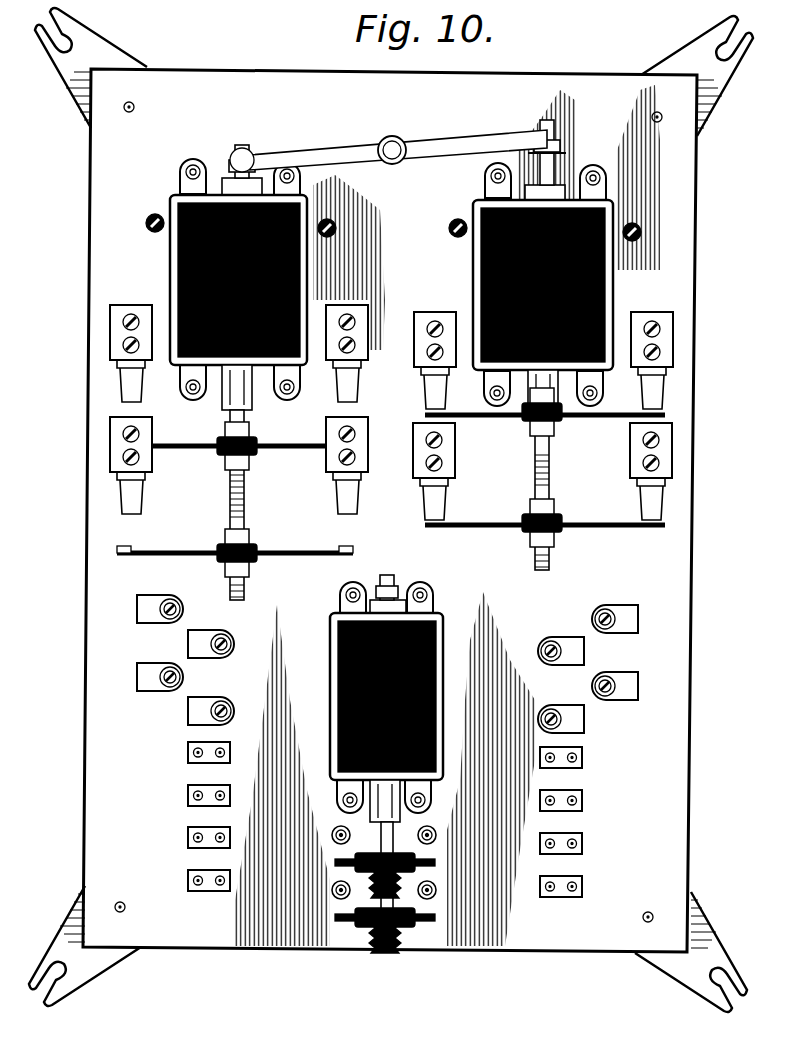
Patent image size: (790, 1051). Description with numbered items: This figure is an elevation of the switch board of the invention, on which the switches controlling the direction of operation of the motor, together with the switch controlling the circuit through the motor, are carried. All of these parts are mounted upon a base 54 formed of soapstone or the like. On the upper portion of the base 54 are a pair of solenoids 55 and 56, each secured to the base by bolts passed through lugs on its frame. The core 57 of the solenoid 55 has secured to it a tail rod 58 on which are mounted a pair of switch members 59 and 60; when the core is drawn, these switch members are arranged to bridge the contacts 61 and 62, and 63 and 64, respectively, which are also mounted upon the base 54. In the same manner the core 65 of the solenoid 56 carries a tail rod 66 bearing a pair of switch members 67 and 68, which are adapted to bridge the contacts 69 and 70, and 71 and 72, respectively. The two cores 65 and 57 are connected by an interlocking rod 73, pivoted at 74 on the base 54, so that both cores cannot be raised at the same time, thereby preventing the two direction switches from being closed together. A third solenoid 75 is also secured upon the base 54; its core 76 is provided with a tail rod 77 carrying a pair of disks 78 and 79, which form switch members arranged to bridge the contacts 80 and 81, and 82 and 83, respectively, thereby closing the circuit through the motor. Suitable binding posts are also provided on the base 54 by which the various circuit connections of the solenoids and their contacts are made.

The base 54 is at (391, 510).
The solenoid 55 is at (300, 271).
The solenoid 56 is at (500, 265).
The core 57 is at (252, 398).
The tail rod 58 is at (244, 512).
The switch member 59 is at (238, 450).
The switch member 60 is at (310, 560).
The contact 61 is at (118, 386).
The contact 62 is at (360, 392).
The contact 63 is at (132, 500).
The contact 64 is at (345, 500).
The core 65 is at (556, 378).
The tail rod 66 is at (549, 470).
The switch member 67 is at (615, 420).
The switch member 68 is at (615, 530).
The contact 69 is at (428, 400).
The contact 70 is at (660, 400).
The contact 71 is at (428, 505).
The contact 72 is at (658, 510).
The interlocking rod 73 is at (480, 147).
The pivot 74 is at (397, 145).
The third solenoid 75 is at (435, 686).
The core 76 is at (400, 800).
The tail rod 77 is at (390, 832).
The disk 78 is at (435, 862).
The disk 79 is at (435, 917).
The contact 80 is at (335, 842).
The contact 81 is at (436, 835).
The contact 82 is at (335, 897).
The contact 83 is at (436, 890).